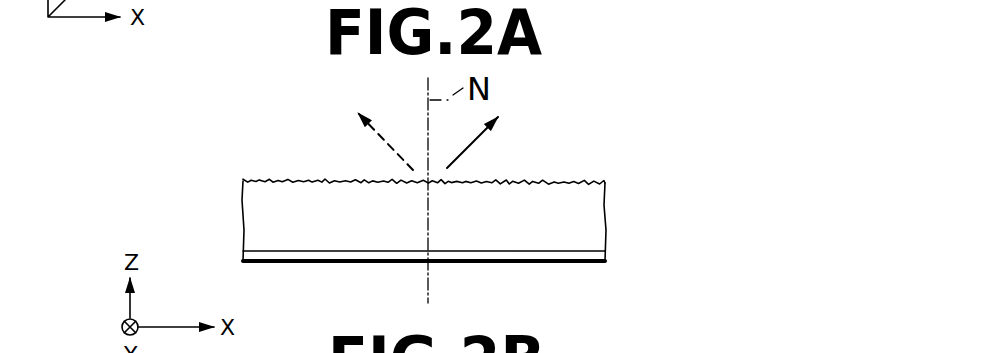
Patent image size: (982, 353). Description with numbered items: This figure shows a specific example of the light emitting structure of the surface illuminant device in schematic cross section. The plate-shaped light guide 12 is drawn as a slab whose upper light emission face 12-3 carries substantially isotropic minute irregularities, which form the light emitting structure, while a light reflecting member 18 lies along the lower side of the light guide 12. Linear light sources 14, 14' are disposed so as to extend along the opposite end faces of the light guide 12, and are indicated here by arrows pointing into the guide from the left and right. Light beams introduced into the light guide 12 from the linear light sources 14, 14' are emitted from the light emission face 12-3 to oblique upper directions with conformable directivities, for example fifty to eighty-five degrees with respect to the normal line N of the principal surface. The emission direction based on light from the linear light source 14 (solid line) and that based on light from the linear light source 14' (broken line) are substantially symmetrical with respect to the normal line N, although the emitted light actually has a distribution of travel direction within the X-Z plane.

The light guide 12 is at (372, 235).
The light emission face 12-3 is at (566, 178).
The linear light source 14 is at (167, 222).
The linear light source 14' is at (709, 222).
The light reflecting member 18 is at (500, 257).